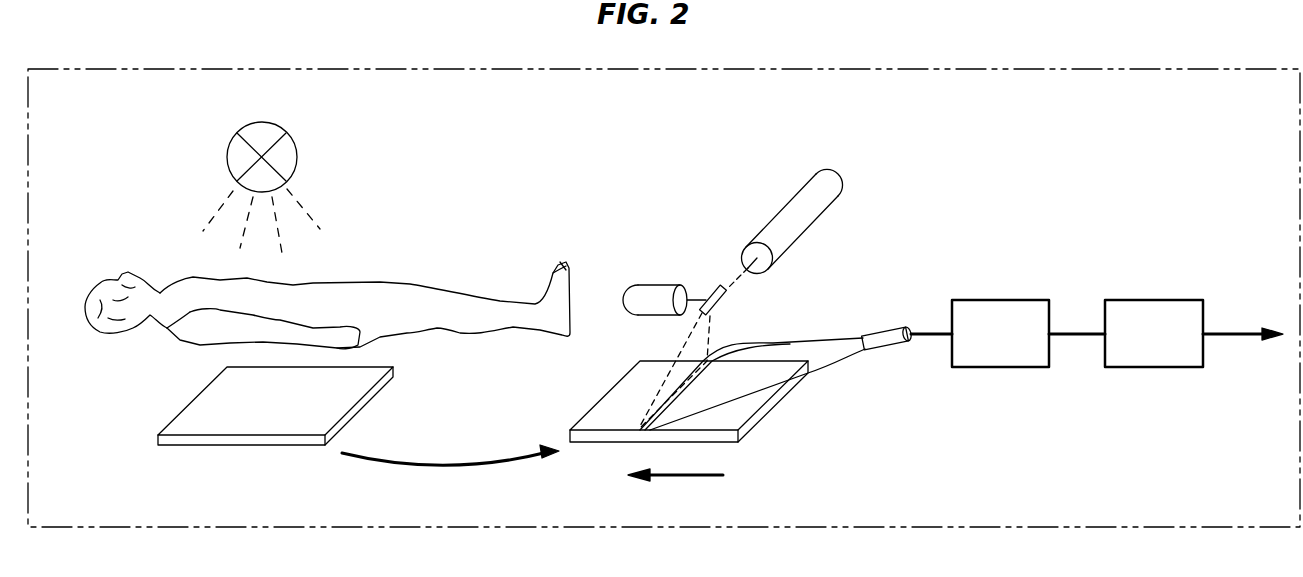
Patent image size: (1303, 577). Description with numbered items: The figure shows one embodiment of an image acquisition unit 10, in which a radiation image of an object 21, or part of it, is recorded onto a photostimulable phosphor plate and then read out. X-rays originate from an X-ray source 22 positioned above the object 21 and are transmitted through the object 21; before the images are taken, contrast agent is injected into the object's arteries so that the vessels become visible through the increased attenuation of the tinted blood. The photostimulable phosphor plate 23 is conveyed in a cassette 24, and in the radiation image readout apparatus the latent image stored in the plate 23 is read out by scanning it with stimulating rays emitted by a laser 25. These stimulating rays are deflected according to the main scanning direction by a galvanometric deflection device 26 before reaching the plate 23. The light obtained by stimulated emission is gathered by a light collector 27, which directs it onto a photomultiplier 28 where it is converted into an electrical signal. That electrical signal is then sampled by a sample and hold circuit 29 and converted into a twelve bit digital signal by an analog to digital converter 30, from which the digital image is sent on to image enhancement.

The image acquisition unit 10 is at (985, 69).
The object 21 is at (393, 282).
The X-ray source 22 is at (297, 160).
The photostimulable phosphor plate 23 is at (610, 442).
The cassette 24 is at (200, 394).
The laser 25 is at (780, 212).
The galvanometric deflection device 26 is at (720, 287).
The light collector 27 is at (775, 344).
The photomultiplier 28 is at (887, 331).
The sample and hold circuit 29 is at (1003, 300).
The analog to digital converter 30 is at (1165, 300).